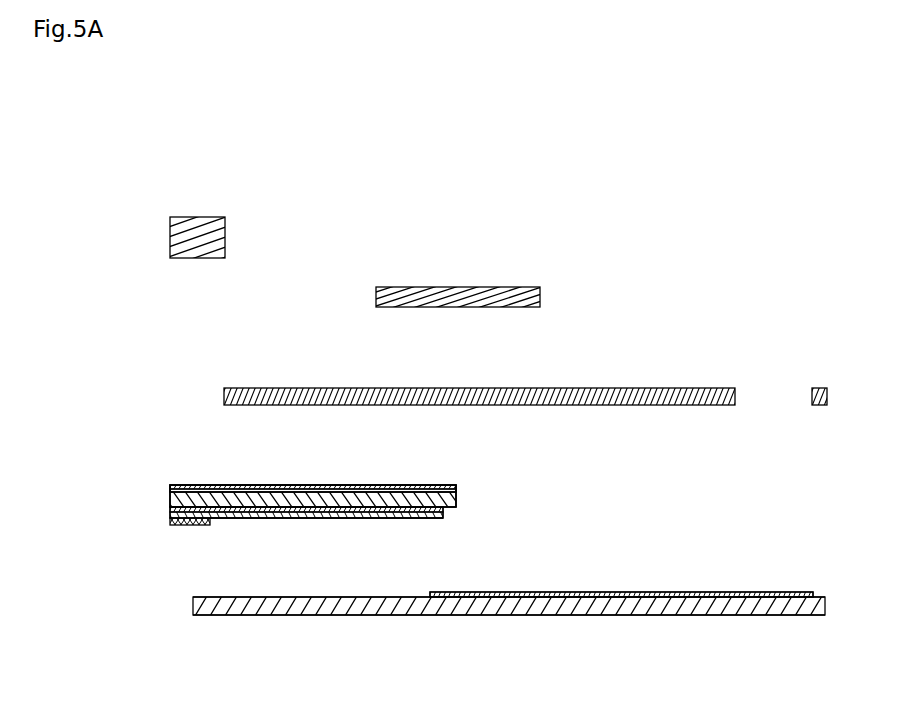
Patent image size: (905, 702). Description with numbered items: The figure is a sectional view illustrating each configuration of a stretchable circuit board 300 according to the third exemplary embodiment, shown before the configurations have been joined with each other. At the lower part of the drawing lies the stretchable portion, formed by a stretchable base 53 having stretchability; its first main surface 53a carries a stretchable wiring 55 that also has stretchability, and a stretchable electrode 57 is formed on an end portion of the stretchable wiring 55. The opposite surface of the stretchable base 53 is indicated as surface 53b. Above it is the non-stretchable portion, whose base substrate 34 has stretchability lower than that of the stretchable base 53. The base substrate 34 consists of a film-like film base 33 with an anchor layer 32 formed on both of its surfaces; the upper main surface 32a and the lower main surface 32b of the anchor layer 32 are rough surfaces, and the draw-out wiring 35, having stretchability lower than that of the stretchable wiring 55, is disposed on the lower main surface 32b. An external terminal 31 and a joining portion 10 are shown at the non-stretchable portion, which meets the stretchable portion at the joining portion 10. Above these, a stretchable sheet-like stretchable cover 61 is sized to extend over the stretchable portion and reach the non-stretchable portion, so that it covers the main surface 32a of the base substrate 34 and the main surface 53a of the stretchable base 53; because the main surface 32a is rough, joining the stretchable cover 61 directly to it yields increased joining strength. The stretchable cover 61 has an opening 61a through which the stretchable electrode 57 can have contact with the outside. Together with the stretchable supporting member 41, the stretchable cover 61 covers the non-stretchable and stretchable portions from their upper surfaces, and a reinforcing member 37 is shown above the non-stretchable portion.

The stretchable circuit board 300 is at (479, 141).
The reinforcing member 37 is at (204, 217).
The stretchable supporting member 41 is at (451, 287).
The stretchable cover 61 is at (708, 384).
The opening 61a is at (812, 402).
The base substrate 34 is at (50, 450).
The anchor layer 32 is at (100, 440).
The main surface 32a is at (170, 487).
The main surface 32b is at (170, 491).
The film base 33 is at (170, 499).
The external terminal 31 is at (185, 525).
The draw-out wiring 35 is at (228, 518).
The joining portion 10 is at (435, 518).
The stretchable wiring 55 is at (612, 592).
The stretchable electrode 57 is at (781, 592).
The stretchable base 53 is at (140, 575).
The main surface 53a is at (207, 597).
The substrate lower surface 53b is at (207, 615).